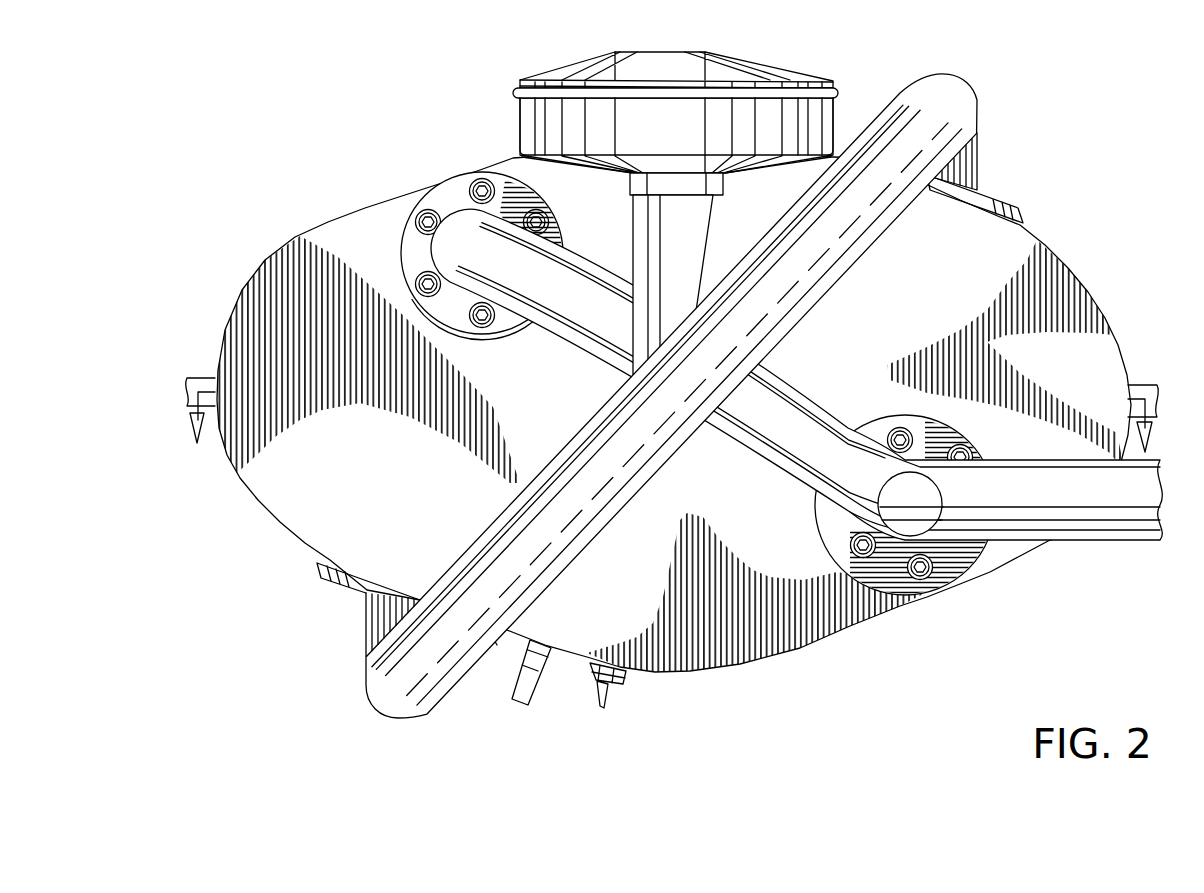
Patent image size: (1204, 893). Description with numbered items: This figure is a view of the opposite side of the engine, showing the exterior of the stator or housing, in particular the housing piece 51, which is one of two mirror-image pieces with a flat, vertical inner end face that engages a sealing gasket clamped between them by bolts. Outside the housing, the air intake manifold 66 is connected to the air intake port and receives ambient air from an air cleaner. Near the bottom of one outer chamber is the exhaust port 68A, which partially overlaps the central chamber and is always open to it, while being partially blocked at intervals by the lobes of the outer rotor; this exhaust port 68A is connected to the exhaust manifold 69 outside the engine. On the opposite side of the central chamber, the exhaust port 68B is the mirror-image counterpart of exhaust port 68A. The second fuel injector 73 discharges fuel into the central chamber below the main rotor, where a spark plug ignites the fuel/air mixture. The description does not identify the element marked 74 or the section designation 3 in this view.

The housing piece 51 is at (915, 301).
The air intake manifold 66 is at (977, 101).
The exhaust manifold 69 is at (790, 407).
The exhaust port 68A is at (948, 505).
The exhaust port 68B is at (464, 216).
The cap / fitting 74 is at (614, 54).
The second fuel injector 73 is at (512, 699).
The section line 3- 3 is at (672, 401).